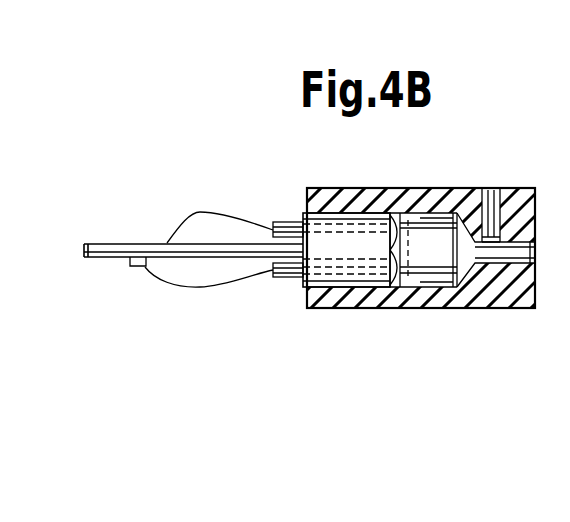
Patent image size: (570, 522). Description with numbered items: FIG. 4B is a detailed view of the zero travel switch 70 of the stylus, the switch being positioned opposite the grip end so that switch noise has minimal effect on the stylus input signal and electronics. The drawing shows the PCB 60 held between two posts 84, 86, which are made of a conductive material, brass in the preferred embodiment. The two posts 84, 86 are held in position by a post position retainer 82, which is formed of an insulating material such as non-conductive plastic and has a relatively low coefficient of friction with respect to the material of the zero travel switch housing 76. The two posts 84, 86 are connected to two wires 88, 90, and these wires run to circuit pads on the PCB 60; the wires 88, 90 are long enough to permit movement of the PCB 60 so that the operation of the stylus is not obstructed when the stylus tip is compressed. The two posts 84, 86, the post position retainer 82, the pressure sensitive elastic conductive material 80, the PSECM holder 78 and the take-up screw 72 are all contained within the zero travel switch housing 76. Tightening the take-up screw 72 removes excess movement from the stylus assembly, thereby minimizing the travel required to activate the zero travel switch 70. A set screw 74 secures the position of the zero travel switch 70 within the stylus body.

The PCB 60 is at (93, 258).
The zero travel switch 70 is at (452, 128).
The take-up screw 72 is at (534, 255).
The set screw 74 is at (491, 205).
The zero travel switch housing 76 is at (365, 300).
The PSECM holder 78 is at (440, 268).
The pressure sensitive elastic conductive material 80 is at (405, 195).
The post position retainer 82 is at (290, 213).
The post 84 is at (330, 233).
The post 86 is at (288, 275).
The wire 88 is at (200, 212).
The wire 90 is at (200, 287).